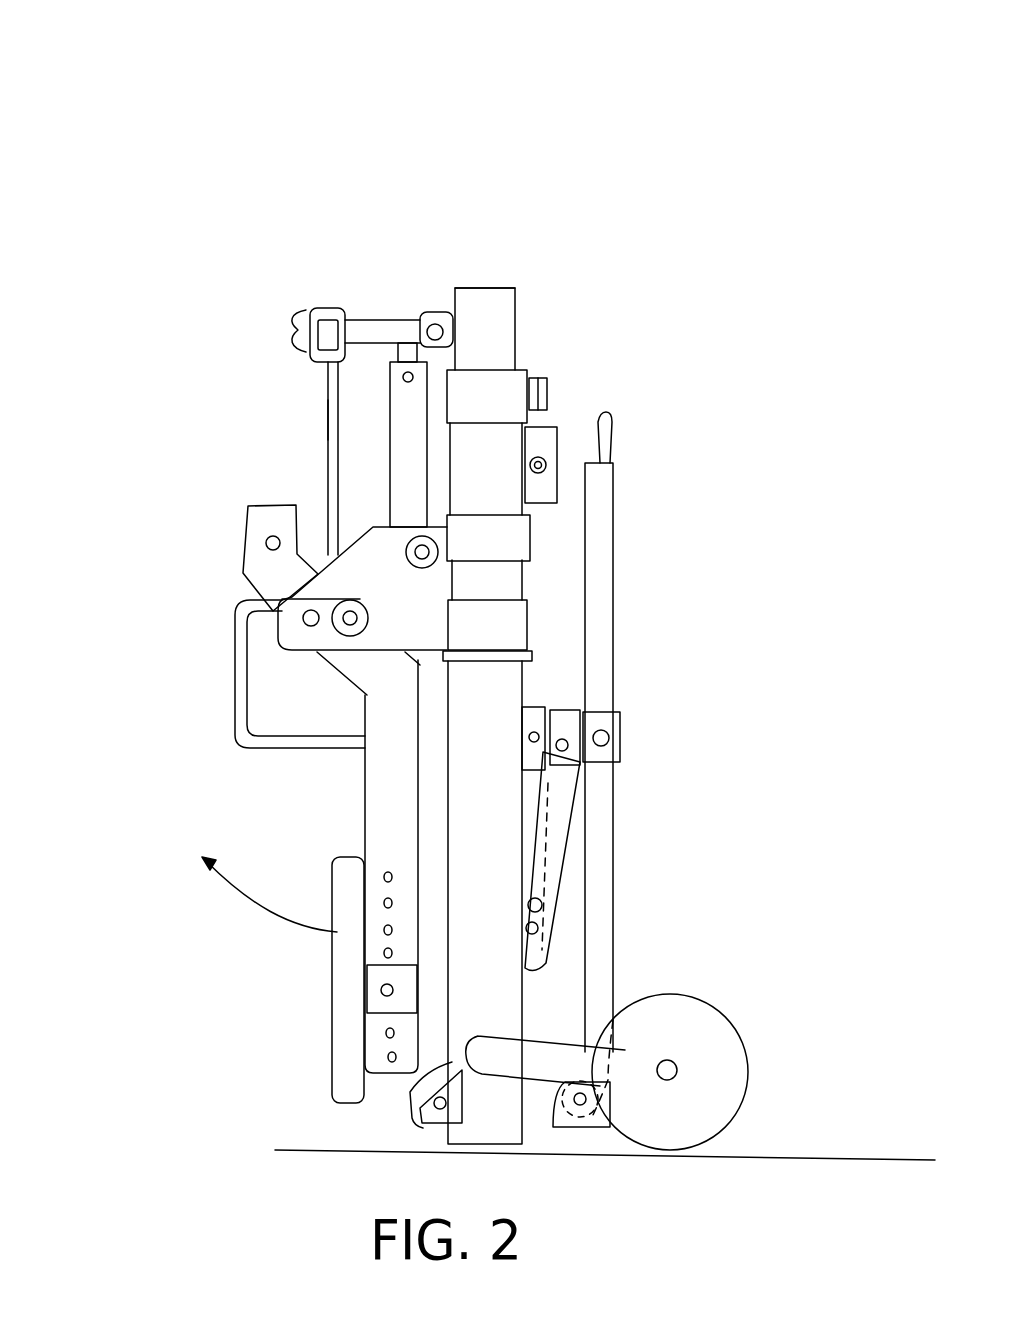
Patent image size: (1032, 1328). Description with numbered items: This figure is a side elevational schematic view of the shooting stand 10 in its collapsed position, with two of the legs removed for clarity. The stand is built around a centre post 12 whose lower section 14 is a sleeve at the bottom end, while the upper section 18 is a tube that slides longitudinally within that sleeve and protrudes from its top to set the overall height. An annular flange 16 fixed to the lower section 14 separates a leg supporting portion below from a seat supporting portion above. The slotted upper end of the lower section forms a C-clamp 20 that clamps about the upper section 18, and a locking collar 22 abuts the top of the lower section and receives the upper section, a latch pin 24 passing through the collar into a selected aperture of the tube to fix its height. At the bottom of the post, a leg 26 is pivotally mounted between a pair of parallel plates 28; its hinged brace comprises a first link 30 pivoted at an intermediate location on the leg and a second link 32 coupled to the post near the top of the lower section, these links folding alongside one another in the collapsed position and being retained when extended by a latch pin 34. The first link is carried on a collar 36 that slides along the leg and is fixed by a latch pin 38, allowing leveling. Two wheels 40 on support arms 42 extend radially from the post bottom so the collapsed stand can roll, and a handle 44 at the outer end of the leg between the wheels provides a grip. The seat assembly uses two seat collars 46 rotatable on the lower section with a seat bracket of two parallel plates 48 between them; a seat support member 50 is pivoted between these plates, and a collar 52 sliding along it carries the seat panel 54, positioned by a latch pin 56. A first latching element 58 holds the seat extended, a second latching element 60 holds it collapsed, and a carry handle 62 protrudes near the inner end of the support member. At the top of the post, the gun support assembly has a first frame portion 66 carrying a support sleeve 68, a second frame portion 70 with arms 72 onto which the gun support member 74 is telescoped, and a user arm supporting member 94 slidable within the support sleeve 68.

The shooting stand 10 is at (647, 88).
The centre post 12 is at (495, 287).
The lower section 14 is at (484, 890).
The annular flange 16 is at (490, 660).
The upper section 18 is at (510, 332).
The C-clamp 20 is at (540, 447).
The locking collar 22 is at (510, 380).
The latch pin 24 is at (535, 390).
The leg 26 is at (613, 652).
The parallel plates 28 is at (430, 1122).
The first link 30 is at (558, 790).
The second link 32 is at (535, 773).
The latch pin 34 is at (542, 905).
The collar 36 is at (612, 738).
The latch pin 38 is at (604, 732).
The wheel 40 is at (735, 1083).
The support arm 42 is at (560, 1056).
The handle 44 is at (617, 418).
The seat collar 46 is at (583, 515).
The parallel plates 48 is at (290, 630).
The seat support member 50 is at (380, 783).
The collar 52 is at (377, 978).
The seat panel 54 is at (340, 1017).
The latch pin 56 is at (382, 989).
The first latching element 58 is at (405, 552).
The second latching element 60 is at (292, 597).
The carry handle 62 is at (240, 676).
The first frame portion 66 is at (443, 220).
The support sleeve 68 is at (327, 308).
The second frame portion 70 is at (384, 383).
The arm 72 is at (400, 365).
The gun support member 74 is at (412, 478).
The user arm supporting member 94 is at (333, 420).